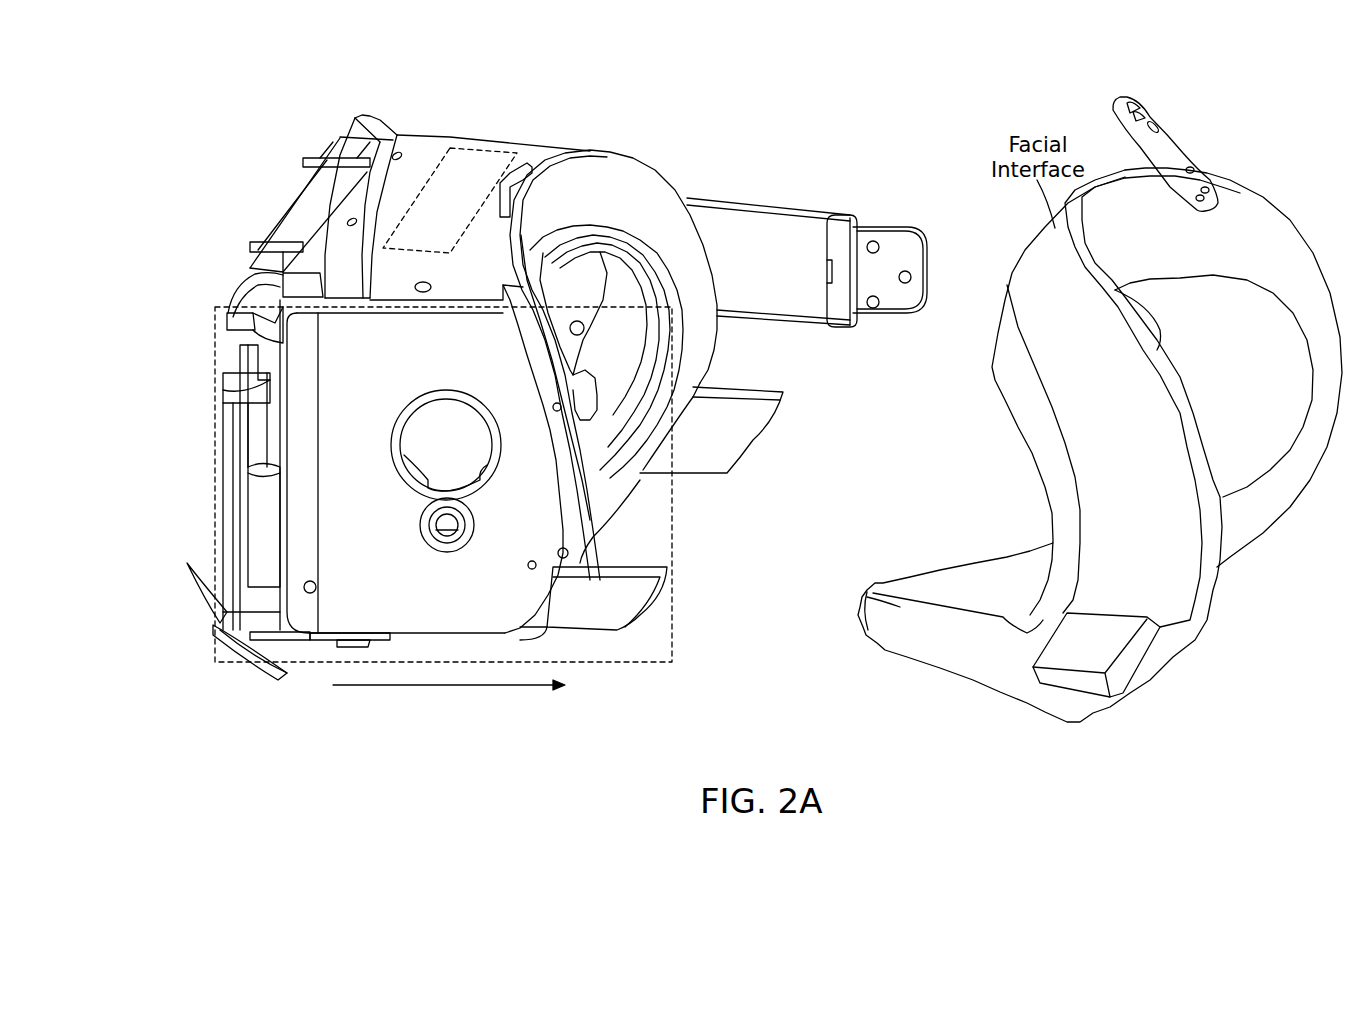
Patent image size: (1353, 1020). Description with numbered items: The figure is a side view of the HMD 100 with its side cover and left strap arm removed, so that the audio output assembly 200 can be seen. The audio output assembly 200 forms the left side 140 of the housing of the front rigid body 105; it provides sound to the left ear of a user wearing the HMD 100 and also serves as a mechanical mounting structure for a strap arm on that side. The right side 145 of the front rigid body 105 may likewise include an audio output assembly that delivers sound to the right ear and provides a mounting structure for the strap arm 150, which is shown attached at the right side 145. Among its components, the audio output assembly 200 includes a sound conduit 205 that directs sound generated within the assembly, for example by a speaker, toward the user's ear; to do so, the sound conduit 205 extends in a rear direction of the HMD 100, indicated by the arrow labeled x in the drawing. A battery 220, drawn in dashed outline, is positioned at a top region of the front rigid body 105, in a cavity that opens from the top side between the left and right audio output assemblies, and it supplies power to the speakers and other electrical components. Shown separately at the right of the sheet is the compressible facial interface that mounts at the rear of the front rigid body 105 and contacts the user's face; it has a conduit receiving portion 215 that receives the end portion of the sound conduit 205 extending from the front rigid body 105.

The HMD 100 is at (683, 65).
The front rigid body 105 is at (347, 188).
The left side 140 is at (533, 500).
The right side 145 is at (490, 138).
The strap arm 150 is at (752, 232).
The audio output assembly 200 is at (308, 655).
The sound conduit 205 is at (590, 610).
The conduit receiving portion 215 is at (1077, 655).
The battery 220 is at (448, 170).